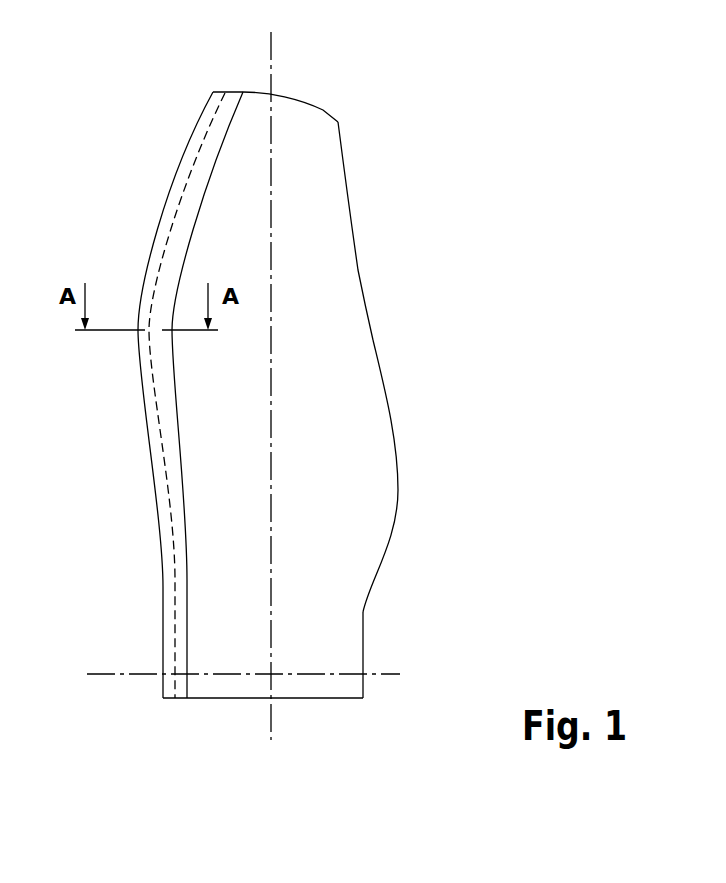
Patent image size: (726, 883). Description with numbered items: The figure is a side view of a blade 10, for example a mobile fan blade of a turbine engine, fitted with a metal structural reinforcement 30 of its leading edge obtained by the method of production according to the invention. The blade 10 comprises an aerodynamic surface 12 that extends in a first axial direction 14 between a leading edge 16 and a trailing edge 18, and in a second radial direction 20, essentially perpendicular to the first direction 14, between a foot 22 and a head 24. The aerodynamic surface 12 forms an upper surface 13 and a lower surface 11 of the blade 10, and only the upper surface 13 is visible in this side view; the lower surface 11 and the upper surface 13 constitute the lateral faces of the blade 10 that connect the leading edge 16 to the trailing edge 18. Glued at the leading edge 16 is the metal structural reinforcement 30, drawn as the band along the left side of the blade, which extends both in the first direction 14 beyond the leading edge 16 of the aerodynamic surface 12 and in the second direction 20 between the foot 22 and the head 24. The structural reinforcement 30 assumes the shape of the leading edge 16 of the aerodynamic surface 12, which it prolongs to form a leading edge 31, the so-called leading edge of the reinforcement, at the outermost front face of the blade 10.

The blade 10 is at (294, 450).
The lower surface 11 is at (424, 543).
The aerodynamic surface 12 is at (362, 490).
The upper surface 13 is at (345, 610).
The first axial direction 14 is at (92, 674).
The leading edge 16 is at (155, 421).
The trailing edge 18 is at (370, 323).
The second radial direction 20 is at (271, 59).
The foot 22 is at (320, 698).
The head 24 is at (323, 110).
The metal structural reinforcement 30 is at (143, 395).
The leading edge of the reinforcement 31 is at (153, 480).